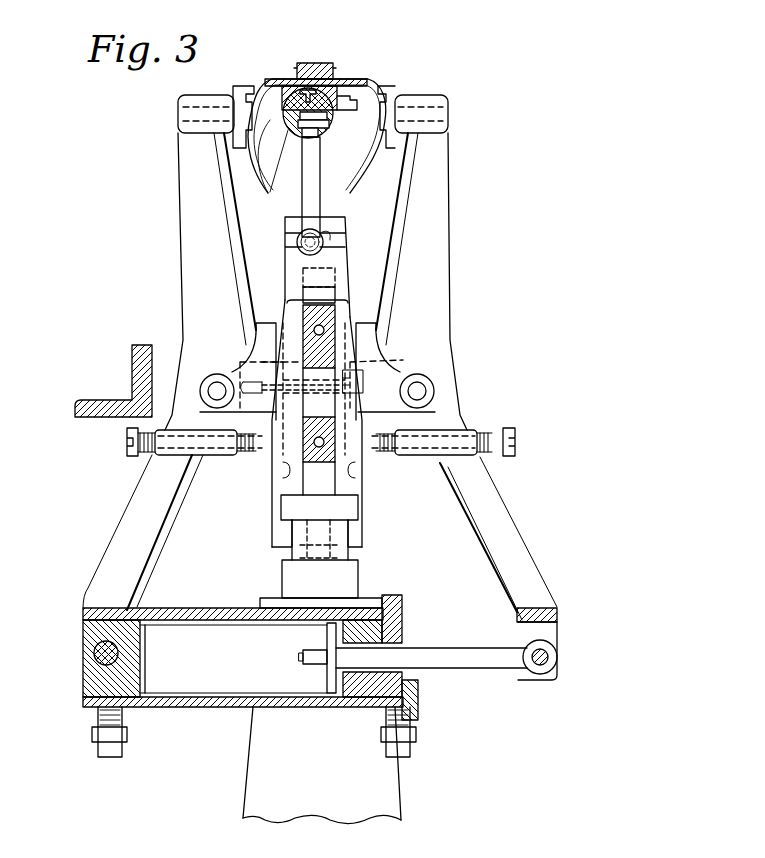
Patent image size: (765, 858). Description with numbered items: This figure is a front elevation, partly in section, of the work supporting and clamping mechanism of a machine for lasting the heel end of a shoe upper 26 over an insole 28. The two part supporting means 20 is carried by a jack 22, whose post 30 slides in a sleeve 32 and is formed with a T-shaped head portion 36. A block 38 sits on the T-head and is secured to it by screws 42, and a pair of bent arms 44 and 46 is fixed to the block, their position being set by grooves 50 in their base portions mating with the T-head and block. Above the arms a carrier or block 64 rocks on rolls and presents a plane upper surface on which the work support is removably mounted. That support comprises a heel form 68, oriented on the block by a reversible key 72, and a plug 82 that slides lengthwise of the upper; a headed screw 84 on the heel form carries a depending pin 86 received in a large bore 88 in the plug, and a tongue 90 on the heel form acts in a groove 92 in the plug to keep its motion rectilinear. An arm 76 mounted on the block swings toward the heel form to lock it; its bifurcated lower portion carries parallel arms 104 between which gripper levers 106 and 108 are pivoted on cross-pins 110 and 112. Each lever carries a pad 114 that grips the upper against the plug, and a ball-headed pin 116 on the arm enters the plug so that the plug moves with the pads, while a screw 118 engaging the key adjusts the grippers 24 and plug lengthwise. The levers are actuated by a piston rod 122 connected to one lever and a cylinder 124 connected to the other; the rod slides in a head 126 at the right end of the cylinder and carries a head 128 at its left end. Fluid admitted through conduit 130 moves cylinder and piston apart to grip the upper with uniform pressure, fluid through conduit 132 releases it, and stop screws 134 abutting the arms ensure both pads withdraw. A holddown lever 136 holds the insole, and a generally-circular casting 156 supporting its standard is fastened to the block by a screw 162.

The two part supporting means 20 is at (368, 198).
The jack 22 is at (399, 514).
The grippers 24 is at (254, 73).
The shoe upper 26 is at (386, 168).
The insole 28 is at (343, 80).
The post 30 is at (355, 581).
The sleeve 32 is at (400, 785).
The T-shaped head portion 36 is at (355, 512).
The block 38 is at (282, 487).
The screws 42 is at (300, 550).
The bent arm 44 is at (362, 463).
The bent arm 46 is at (271, 502).
The grooves 50 is at (284, 468).
The carrier or block 64 is at (352, 397).
The heel form 68 is at (272, 79).
The key 72 is at (345, 220).
The arm 76 is at (320, 160).
The plug 82 is at (288, 160).
The headed screw 84 is at (290, 112).
The depending pin 86 is at (328, 117).
The bore 88 is at (285, 122).
The tongue 90 is at (345, 97).
The groove 92 is at (300, 86).
The parallel arms 104 is at (262, 323).
The gripper lever 106 is at (452, 309).
The gripper lever 108 is at (181, 291).
The cross-pin 110 is at (423, 388).
The cross-pin 112 is at (215, 388).
The pad 114 is at (243, 100).
The ball-headed pin 116 is at (318, 132).
The screw 118 is at (297, 248).
The piston rod 122 is at (474, 668).
The cylinder 124 is at (200, 708).
The head 126 is at (403, 625).
The head 128 is at (326, 676).
The conduit 130 is at (97, 747).
The conduit 132 is at (411, 749).
The stop screws 134 is at (126, 441).
The holddown lever 136 is at (318, 63).
The generally-circular casting 156 is at (134, 370).
The screw 162 is at (398, 362).